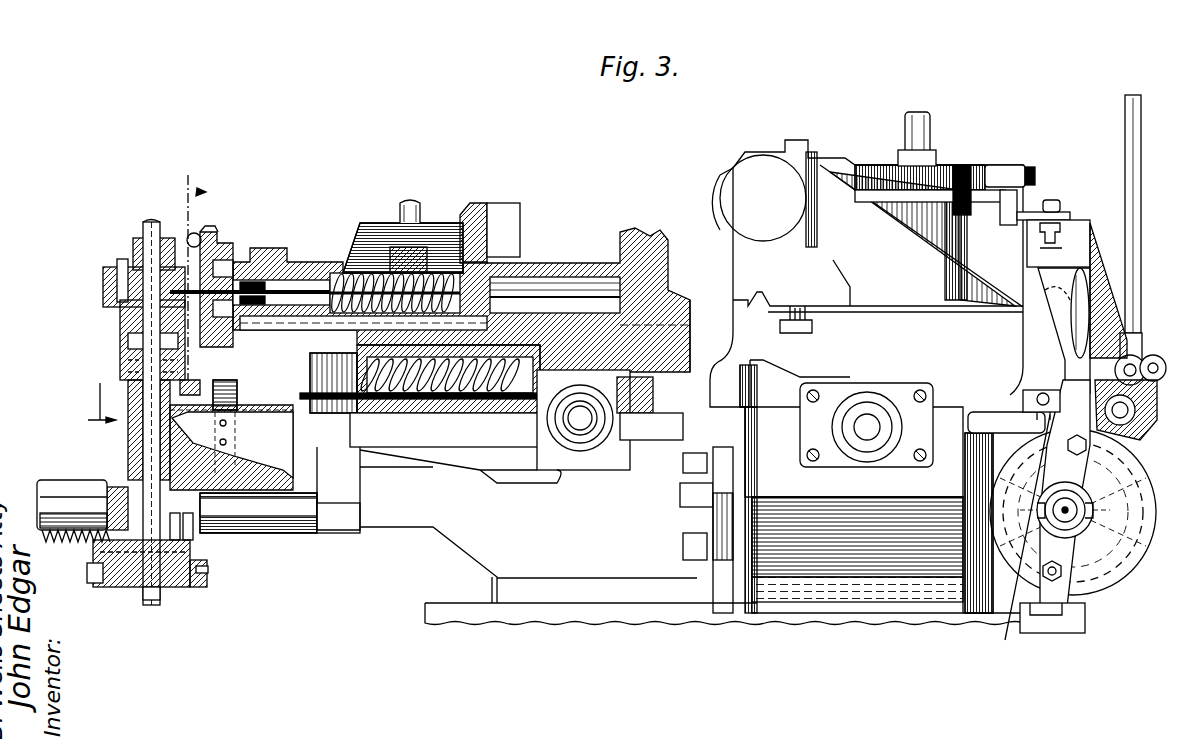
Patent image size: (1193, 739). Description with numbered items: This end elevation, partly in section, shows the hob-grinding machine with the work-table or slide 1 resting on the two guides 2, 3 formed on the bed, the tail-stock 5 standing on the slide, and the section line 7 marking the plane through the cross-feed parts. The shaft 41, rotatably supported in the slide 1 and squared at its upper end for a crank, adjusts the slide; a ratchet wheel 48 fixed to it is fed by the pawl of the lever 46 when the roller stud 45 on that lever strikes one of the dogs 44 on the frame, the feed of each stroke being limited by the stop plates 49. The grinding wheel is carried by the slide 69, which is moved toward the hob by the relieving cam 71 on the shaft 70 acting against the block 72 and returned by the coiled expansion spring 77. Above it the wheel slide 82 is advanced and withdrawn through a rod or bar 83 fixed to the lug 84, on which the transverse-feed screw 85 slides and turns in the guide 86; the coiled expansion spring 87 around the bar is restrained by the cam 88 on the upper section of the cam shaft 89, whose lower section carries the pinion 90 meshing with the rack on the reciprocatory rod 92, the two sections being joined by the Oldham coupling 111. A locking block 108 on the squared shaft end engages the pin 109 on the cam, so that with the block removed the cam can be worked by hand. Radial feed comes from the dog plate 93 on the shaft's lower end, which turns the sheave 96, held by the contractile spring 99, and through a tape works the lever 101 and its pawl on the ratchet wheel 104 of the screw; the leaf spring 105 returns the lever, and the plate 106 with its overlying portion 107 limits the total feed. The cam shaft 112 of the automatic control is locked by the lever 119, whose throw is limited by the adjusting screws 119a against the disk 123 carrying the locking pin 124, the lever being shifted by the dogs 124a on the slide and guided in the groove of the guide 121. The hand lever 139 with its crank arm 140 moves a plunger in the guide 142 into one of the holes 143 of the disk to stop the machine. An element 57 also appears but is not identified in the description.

The slide or work-table 1 is at (866, 376).
The guide 2 is at (968, 390).
The guide 3 is at (765, 378).
The tail-stock 5 is at (745, 258).
The section line 7 is at (147, 303).
The shaft 41 is at (927, 115).
The dogs 44 is at (1050, 207).
The roller stud 45 is at (1003, 218).
The lever 46 is at (1005, 168).
The ratchet wheel 48 is at (875, 170).
The stop plates 49 is at (963, 170).
The bolt 57 is at (680, 495).
The slide 69 is at (688, 345).
The shaft 70 is at (578, 420).
The relieving cam 71 is at (595, 443).
The block 72 is at (625, 440).
The coiled expansion spring 77 is at (445, 383).
The slide 82 is at (372, 224).
The rod or bar 83 is at (290, 290).
The lug 84 is at (515, 280).
The adjusting or transverse-feed screw 85 is at (337, 275).
The guide 86 is at (272, 248).
The coiled expansion spring 87 is at (347, 280).
The cam 88 is at (108, 287).
The shaft 89 is at (151, 225).
The pinion 90 is at (205, 528).
The reciprocatory rod 92 is at (330, 533).
The dog plate 93 is at (182, 582).
The sheave or winding drum 96 is at (118, 570).
The coiled contractile spring 99 is at (58, 545).
The lever 101 is at (222, 233).
The ratchet wheel 104 is at (192, 350).
The leaf spring 105 is at (237, 378).
The plate 106 is at (190, 236).
The portion 107 is at (212, 230).
The locking block 108 is at (133, 245).
The pin 109 is at (116, 263).
The Oldham coupling 111 is at (130, 328).
The cam shaft 112 is at (1070, 517).
The lever 119 is at (1055, 285).
The adjusting screws 119a is at (1015, 539).
The guide 121 is at (1068, 633).
The disk 123 is at (1090, 590).
The locking pin 124 is at (1128, 440).
The dogs 124a is at (1040, 415).
The hand lever 139 is at (1126, 158).
The crank arm 140 is at (1160, 355).
The guide 142 is at (1131, 410).
The holes 143 is at (968, 487).